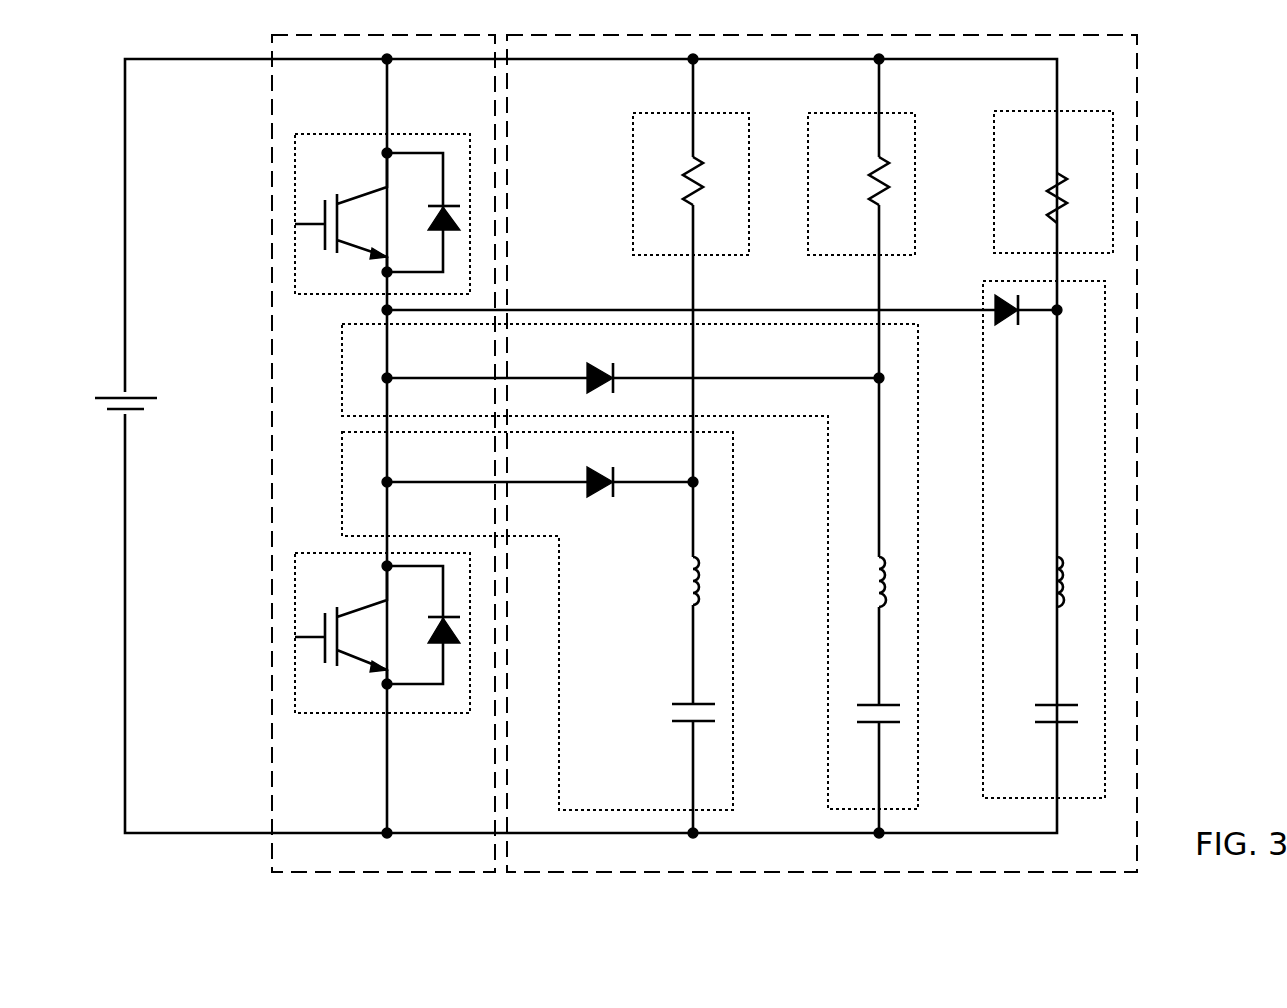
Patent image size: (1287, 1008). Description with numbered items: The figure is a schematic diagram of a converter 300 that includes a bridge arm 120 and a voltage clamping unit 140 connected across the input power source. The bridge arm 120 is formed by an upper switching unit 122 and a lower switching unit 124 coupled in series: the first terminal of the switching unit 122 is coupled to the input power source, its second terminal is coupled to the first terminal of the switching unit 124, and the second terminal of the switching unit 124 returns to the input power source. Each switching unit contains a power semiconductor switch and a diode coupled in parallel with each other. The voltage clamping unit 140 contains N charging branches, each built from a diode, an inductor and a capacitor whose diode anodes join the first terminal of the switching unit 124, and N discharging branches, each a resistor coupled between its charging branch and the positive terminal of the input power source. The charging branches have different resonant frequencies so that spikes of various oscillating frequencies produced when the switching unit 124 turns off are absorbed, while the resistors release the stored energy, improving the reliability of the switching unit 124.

The converter 300 is at (1286, 59).
The bridge arm 120 is at (272, 278).
The switching unit 122 is at (295, 188).
The switching unit 124 is at (292, 583).
The voltage clamping unit 140 is at (1137, 310).